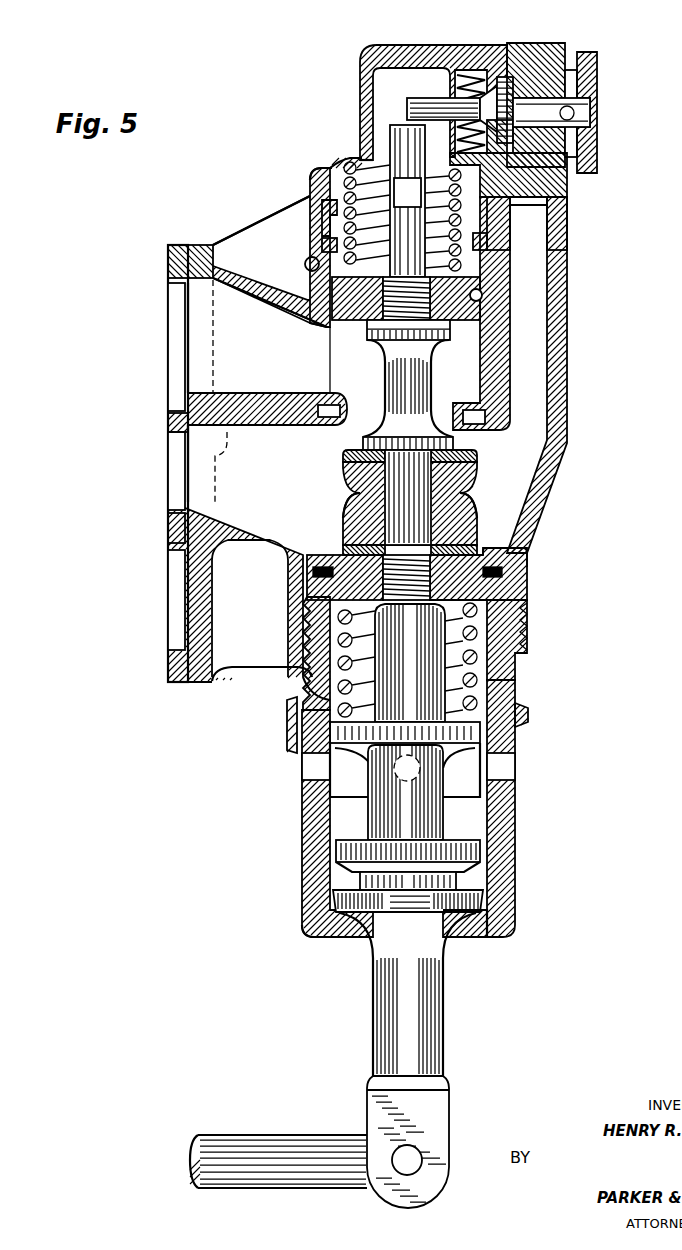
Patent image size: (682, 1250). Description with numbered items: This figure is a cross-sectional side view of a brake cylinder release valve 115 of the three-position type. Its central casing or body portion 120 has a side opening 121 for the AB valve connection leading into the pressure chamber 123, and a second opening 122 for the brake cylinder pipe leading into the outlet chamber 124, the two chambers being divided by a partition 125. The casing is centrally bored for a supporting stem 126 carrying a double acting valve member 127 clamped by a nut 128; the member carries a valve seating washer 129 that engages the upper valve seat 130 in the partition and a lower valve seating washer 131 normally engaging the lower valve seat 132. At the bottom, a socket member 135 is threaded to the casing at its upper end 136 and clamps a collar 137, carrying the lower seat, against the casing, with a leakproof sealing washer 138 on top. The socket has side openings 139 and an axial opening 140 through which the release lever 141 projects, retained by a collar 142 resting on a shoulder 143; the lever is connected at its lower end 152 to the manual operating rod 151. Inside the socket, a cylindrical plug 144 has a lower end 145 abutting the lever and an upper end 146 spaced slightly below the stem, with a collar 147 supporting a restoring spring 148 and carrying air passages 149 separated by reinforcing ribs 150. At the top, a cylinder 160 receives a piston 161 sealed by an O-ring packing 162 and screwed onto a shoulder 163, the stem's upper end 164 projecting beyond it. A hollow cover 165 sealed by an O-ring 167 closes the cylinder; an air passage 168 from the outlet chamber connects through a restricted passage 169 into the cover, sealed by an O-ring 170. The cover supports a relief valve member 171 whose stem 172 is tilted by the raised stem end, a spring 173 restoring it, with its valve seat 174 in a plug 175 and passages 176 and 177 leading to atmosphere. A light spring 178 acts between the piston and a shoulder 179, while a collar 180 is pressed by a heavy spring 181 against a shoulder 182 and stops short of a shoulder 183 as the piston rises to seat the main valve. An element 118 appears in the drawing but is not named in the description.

The brake cylinder release valve 115 is at (211, 203).
The flange web 118 is at (178, 529).
The central casing or body portion 120 is at (183, 245).
The side opening 121 is at (185, 327).
The second opening 122 is at (185, 469).
The pressure chamber 123 is at (271, 336).
The outlet chamber 124 is at (237, 467).
The partition 125 is at (300, 398).
The supporting stem 126 is at (400, 381).
The double acting valve member 127 is at (362, 492).
The nut 128 is at (506, 553).
The valve seating washer 129 is at (474, 463).
The upper valve seat 130 is at (468, 427).
The lower valve seating washer 131 is at (467, 525).
The lower valve seat 132 is at (346, 548).
The socket member 135 is at (513, 822).
The threaded upper end 136 is at (512, 634).
The collar 137 is at (493, 585).
The leakproof sealing washer 138 is at (440, 565).
The openings 139 is at (503, 766).
The axial opening 140 is at (465, 938).
The manual operable release lever 141 is at (417, 1034).
The collar 142 is at (477, 902).
The shoulder 143 is at (330, 936).
The cylindrical plug 144 is at (403, 824).
The lower end 145 is at (362, 857).
The upper end 146 is at (350, 632).
The collar 147 is at (340, 744).
The restoring spring 148 is at (337, 695).
The air passages 149 is at (477, 731).
The reinforcing ribs 150 is at (411, 704).
The manual operating rod 151 is at (257, 1160).
The lower end 152 is at (410, 1158).
The cylinder 160 is at (302, 287).
The piston 161 is at (463, 310).
The O-ring packing 162 is at (484, 295).
The shoulder 163 is at (372, 338).
The upper end 164 is at (407, 140).
The hollow cover 165 is at (362, 80).
The O-ring 167 is at (332, 212).
The air passage 168 is at (530, 331).
The restricted passage 169 is at (567, 181).
The O-ring 170 is at (567, 205).
The relief valve member 171 is at (500, 73).
The stem 172 is at (433, 105).
The spring 173 is at (465, 70).
The valve seat 174 is at (535, 44).
The plug 175 is at (597, 94).
The perpendicular passages 176 is at (586, 66).
The horizontal passage 177 is at (594, 119).
The light spring 178 is at (488, 259).
The shoulder 179 is at (362, 153).
The collar 180 is at (322, 250).
The heavy spring 181 is at (340, 165).
The shoulder 182 is at (306, 266).
The shoulder 183 is at (323, 235).